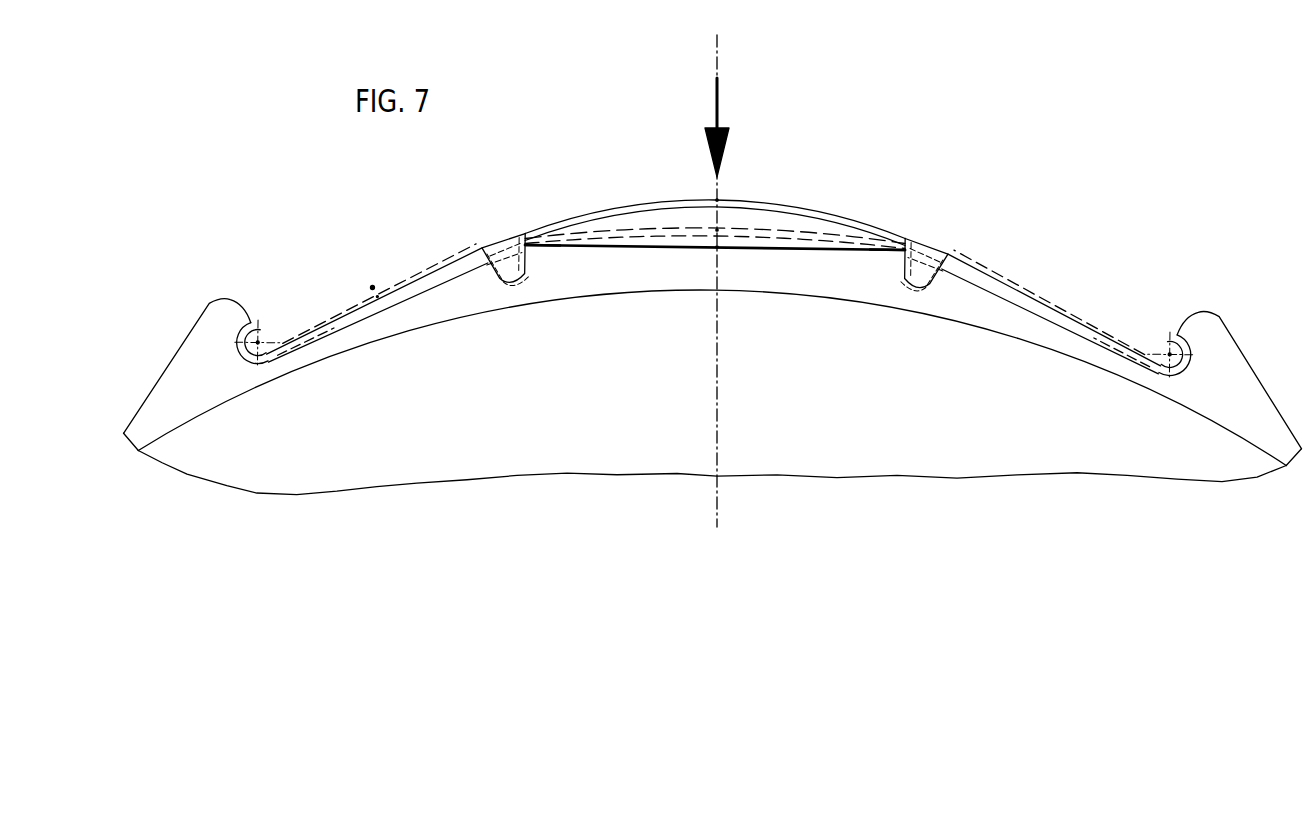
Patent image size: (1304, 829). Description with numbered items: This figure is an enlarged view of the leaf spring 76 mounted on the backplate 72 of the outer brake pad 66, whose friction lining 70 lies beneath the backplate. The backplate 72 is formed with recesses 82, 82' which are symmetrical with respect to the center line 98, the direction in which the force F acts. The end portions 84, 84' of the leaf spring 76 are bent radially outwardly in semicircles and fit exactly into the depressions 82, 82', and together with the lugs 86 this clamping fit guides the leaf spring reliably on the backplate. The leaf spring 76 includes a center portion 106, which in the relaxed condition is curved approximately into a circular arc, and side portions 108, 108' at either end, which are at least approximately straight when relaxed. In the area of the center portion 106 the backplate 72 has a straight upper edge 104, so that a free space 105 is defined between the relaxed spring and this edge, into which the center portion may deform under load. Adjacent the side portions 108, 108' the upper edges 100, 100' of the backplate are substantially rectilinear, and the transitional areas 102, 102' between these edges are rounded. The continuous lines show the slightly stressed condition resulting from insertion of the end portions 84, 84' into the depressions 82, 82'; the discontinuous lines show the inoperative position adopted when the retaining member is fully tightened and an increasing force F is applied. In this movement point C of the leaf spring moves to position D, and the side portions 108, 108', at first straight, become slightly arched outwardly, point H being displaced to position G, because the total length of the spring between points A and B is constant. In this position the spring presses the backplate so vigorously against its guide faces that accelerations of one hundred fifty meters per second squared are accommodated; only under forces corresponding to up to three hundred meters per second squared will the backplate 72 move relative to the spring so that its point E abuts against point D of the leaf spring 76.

The outer brake pad 66 is at (530, 488).
The friction lining 70 is at (770, 427).
The backplate 72 is at (205, 392).
The leaf spring 76 is at (912, 220).
The recess 82 is at (280, 308).
The recess 82' is at (1221, 351).
The end portion 84 is at (258, 382).
The end portion 84' is at (1168, 390).
The lug 86 is at (500, 284).
The center line 98 is at (718, 512).
The upper edge 100 is at (395, 303).
The upper edge 100' is at (1032, 313).
The transitional area 102 is at (553, 290).
The transitional area 102' is at (872, 294).
The straight upper edge 104 is at (784, 252).
The free space 105 is at (660, 212).
The center portion 106 is at (822, 215).
The side portion 108 is at (377, 290).
The side portion 108' is at (1052, 296).
The point A is at (258, 336).
The point B is at (1166, 346).
The point C is at (726, 194).
The position D is at (728, 224).
The point E is at (732, 243).
The force F is at (717, 95).
The position G is at (368, 278).
The point H is at (383, 286).